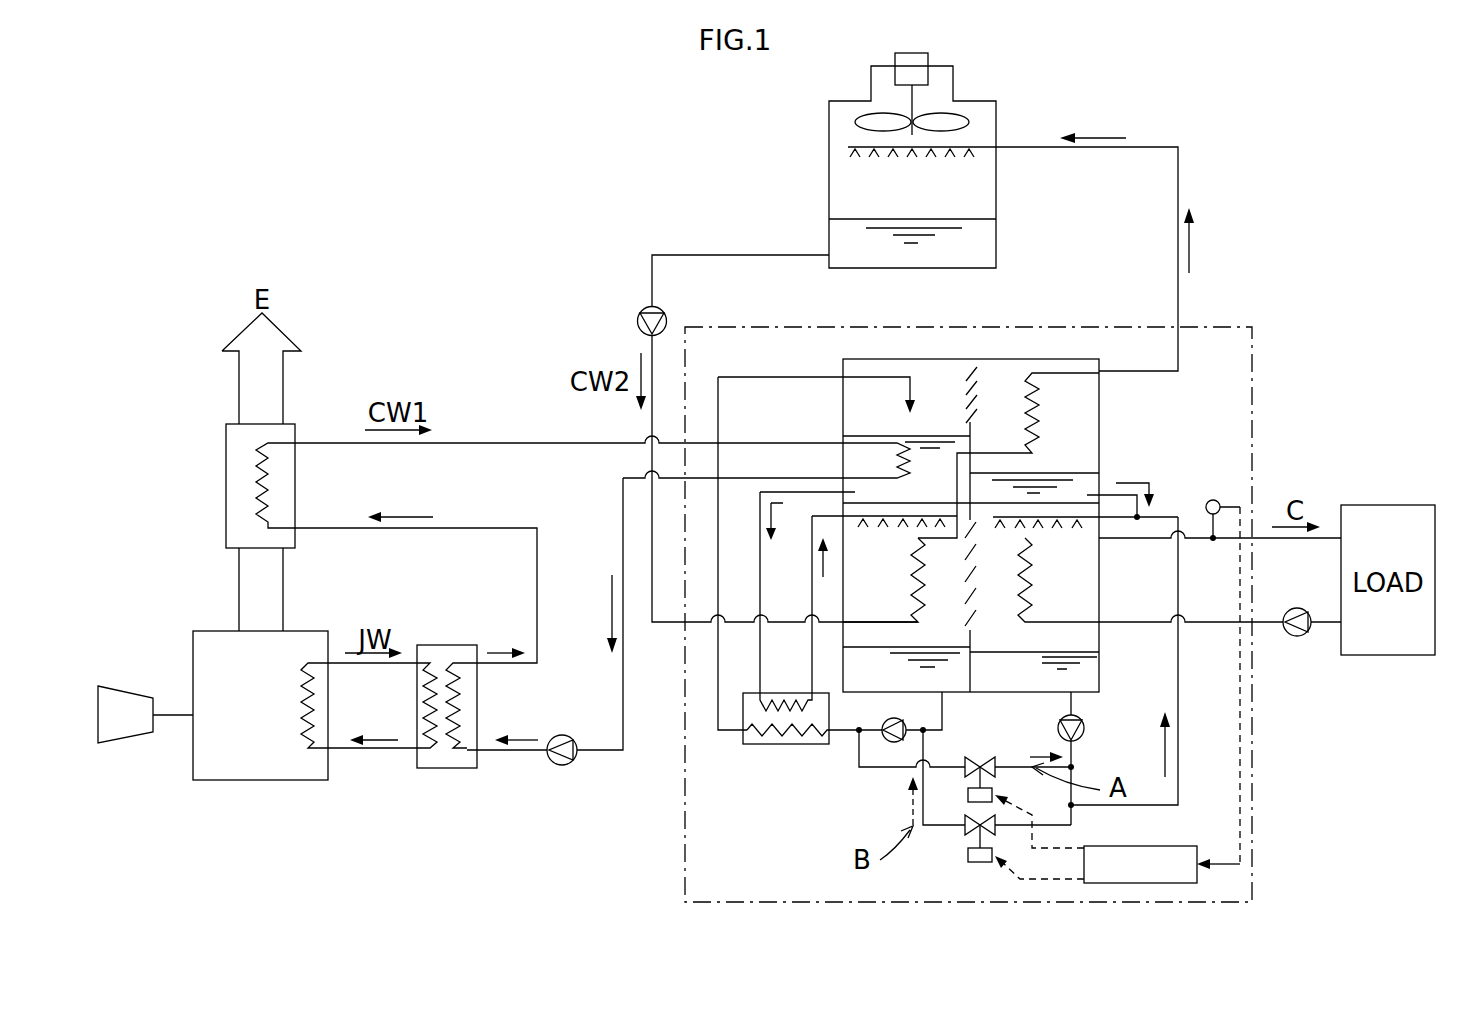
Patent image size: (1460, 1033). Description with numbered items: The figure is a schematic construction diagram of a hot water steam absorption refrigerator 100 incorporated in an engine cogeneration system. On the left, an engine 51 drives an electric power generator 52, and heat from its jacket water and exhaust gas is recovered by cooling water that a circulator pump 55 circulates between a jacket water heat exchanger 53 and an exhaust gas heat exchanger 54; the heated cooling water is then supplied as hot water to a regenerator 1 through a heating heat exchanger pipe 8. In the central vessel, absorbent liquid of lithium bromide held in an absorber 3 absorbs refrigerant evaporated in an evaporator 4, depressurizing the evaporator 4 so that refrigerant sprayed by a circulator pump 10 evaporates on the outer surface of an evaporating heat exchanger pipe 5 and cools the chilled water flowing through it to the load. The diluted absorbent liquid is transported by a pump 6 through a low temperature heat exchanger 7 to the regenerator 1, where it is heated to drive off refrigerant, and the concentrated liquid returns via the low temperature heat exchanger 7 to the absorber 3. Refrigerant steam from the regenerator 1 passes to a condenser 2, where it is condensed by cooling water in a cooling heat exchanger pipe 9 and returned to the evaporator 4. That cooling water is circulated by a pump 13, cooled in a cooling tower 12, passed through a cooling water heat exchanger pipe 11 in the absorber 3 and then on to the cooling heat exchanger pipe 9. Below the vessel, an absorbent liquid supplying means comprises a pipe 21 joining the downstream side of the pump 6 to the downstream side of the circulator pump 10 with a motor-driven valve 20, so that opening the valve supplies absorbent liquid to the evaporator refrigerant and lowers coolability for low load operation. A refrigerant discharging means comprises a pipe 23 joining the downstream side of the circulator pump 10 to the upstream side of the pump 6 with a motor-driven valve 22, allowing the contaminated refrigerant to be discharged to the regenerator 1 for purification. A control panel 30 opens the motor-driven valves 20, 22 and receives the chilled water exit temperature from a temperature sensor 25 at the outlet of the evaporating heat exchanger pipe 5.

The regenerator 1 is at (944, 387).
The condenser 2 is at (1064, 461).
The absorber 3 is at (883, 624).
The evaporator 4 is at (1047, 641).
The evaporating heat exchanger pipe 5 is at (1060, 620).
The pump 6 is at (892, 745).
The low temperature heat exchanger 7 is at (783, 746).
The heating heat exchanger pipe 8 is at (870, 447).
The cooling heat exchanger pipe 9 is at (1070, 377).
The circulator pump 10 is at (1085, 726).
The cooling water heat exchanger pipe 11 is at (870, 618).
The cooling tower 12 is at (829, 132).
The pump 13 is at (637, 325).
The motor-driven valve 20 is at (978, 757).
The pipe 21 is at (1007, 765).
The motor-driven valve 22 is at (965, 832).
The pipe 23 is at (1071, 825).
The temperature sensor 25 is at (1213, 499).
The control panel 30 is at (1187, 846).
The engine 51 is at (257, 781).
The electric power generator 52 is at (123, 689).
The jacket water heat exchanger 53 is at (445, 769).
The exhaust gas heat exchanger 54 is at (226, 490).
The circulator pump 55 is at (563, 766).
The absorption refrigerator 100 is at (1257, 360).